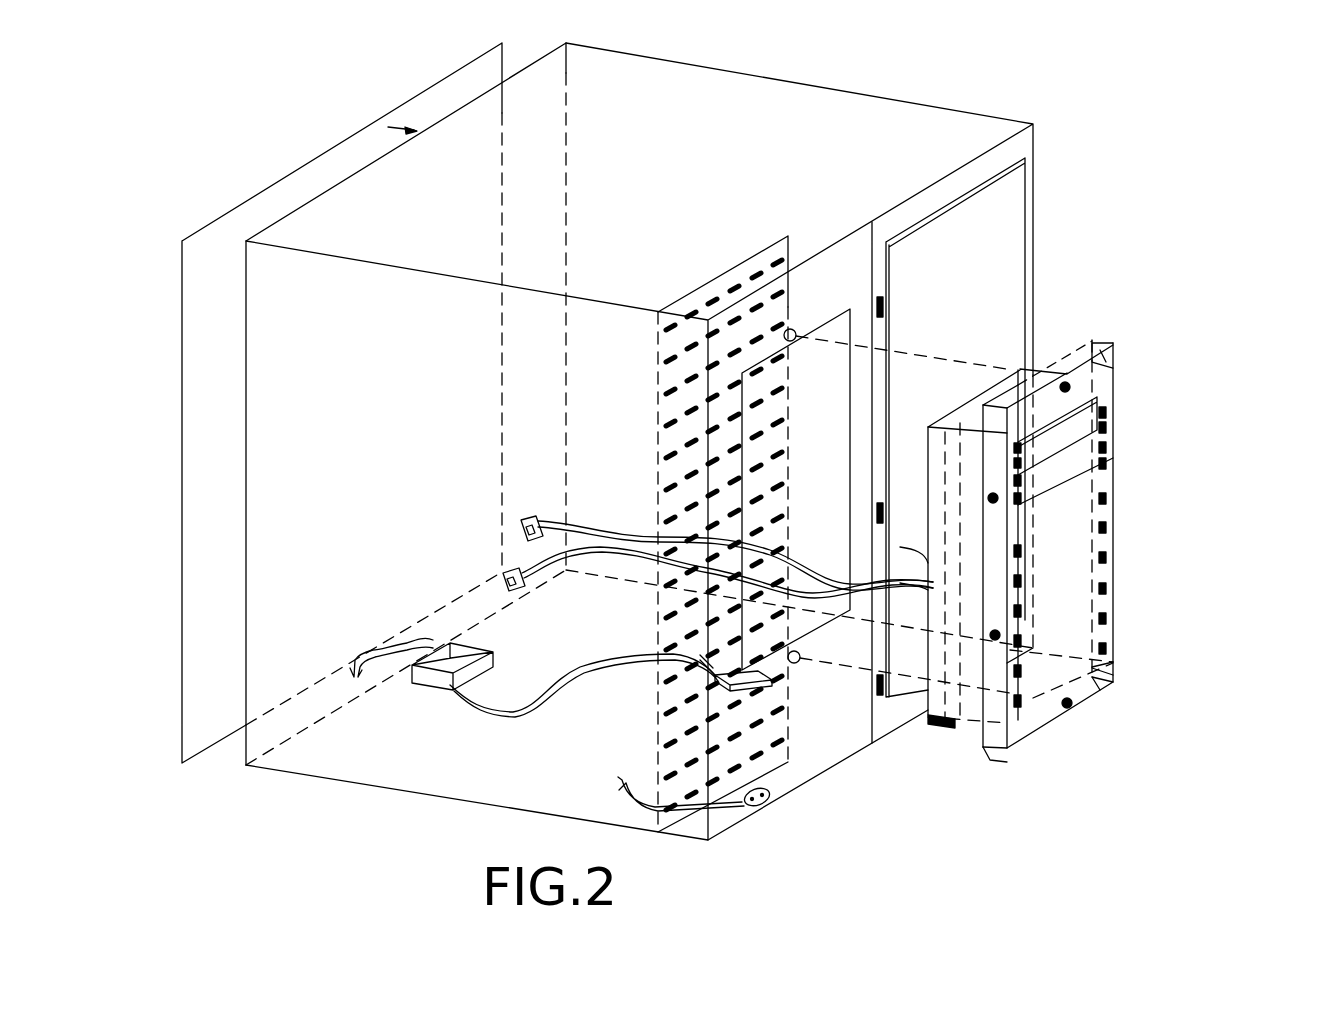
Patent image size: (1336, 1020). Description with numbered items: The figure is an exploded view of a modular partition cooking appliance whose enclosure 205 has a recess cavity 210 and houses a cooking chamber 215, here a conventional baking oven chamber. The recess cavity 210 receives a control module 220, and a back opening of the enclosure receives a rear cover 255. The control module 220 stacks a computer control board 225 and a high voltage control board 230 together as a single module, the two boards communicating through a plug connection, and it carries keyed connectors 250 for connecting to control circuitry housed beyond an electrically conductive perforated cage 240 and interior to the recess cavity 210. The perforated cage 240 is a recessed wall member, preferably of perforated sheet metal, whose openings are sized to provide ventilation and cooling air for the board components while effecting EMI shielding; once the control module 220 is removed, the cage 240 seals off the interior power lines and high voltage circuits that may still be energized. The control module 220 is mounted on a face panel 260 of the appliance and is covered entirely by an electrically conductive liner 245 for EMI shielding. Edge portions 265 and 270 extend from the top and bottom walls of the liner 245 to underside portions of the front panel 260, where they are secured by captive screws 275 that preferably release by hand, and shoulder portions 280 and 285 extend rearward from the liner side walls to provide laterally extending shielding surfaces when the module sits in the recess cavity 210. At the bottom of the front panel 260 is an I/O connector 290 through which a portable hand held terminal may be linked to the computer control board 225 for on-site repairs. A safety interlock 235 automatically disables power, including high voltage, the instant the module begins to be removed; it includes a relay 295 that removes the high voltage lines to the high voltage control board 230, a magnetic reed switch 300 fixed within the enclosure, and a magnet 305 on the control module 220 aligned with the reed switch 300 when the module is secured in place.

The enclosure 205 is at (363, 790).
The recess cavity 210 is at (852, 497).
The cooking chamber 215 is at (992, 279).
The control module 220 is at (1118, 450).
The computer control board 225 is at (1063, 618).
The high voltage control board 230 is at (968, 578).
The safety interlock 235 is at (717, 755).
The electrically conductive perforated cage 240 is at (740, 260).
The electrically conductive liner 245 is at (1015, 367).
The keyed connectors 250 is at (532, 517).
The rear cover 255 is at (182, 318).
The face panel 260 is at (808, 762).
The edge portion 265 is at (1100, 340).
The edge portion 270 is at (1117, 668).
The captive screws 275 is at (1115, 348).
The shoulder portion 280 is at (988, 752).
The shoulder portion 285 is at (1113, 395).
The I/O connector 290 is at (765, 805).
The relay 295 is at (555, 649).
The magnetic reed switch 300 is at (775, 721).
The magnet 305 is at (940, 728).